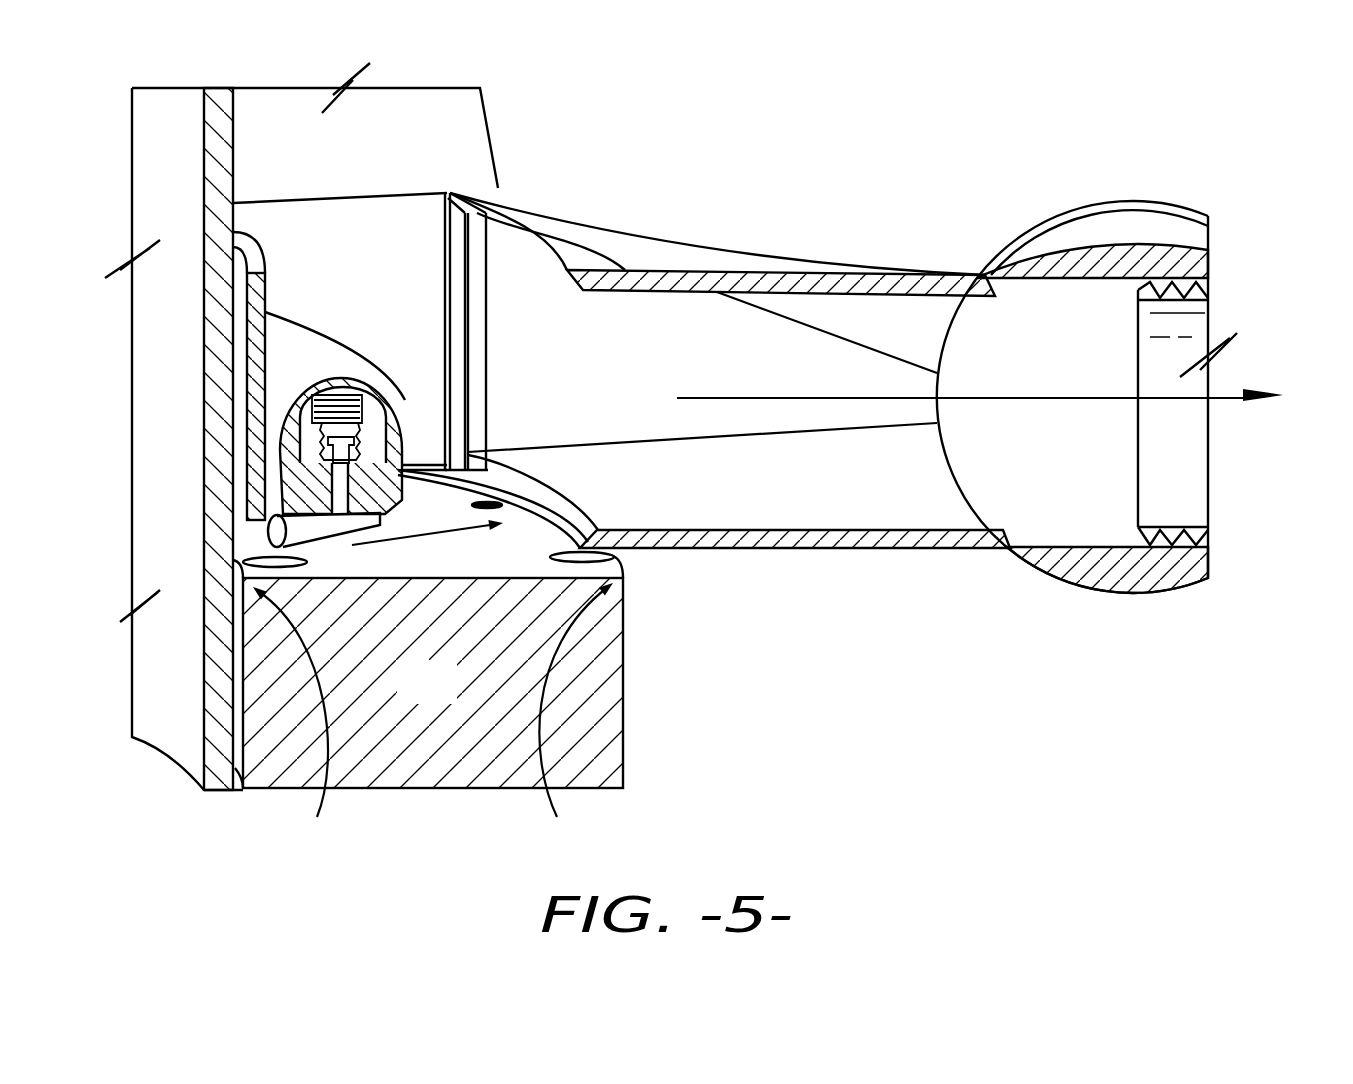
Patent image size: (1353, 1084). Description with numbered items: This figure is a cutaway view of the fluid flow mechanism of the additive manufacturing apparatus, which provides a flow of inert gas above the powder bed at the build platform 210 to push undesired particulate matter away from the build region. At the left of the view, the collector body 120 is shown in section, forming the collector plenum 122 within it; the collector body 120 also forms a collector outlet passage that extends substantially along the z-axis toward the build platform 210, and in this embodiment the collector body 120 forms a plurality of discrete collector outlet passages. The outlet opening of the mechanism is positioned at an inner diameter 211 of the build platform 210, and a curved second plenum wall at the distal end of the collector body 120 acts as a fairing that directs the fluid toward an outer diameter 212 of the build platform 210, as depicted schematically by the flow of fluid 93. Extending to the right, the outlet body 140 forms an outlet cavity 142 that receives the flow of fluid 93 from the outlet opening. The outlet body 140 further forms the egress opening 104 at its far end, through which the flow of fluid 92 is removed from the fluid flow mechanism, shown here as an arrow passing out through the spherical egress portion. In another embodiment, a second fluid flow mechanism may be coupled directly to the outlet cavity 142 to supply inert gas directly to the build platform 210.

The flow of fluid egressing 92 is at (1008, 400).
The flow of fluid 93 is at (427, 533).
The egress opening 104 is at (1238, 452).
The collector body 120 is at (342, 383).
The collector plenum 122 is at (373, 430).
The outlet body 140 is at (647, 290).
The outlet cavity 142 is at (750, 376).
The build platform 210 is at (450, 698).
The inner diameter 211 is at (290, 722).
The outer diameter 212 is at (576, 719).